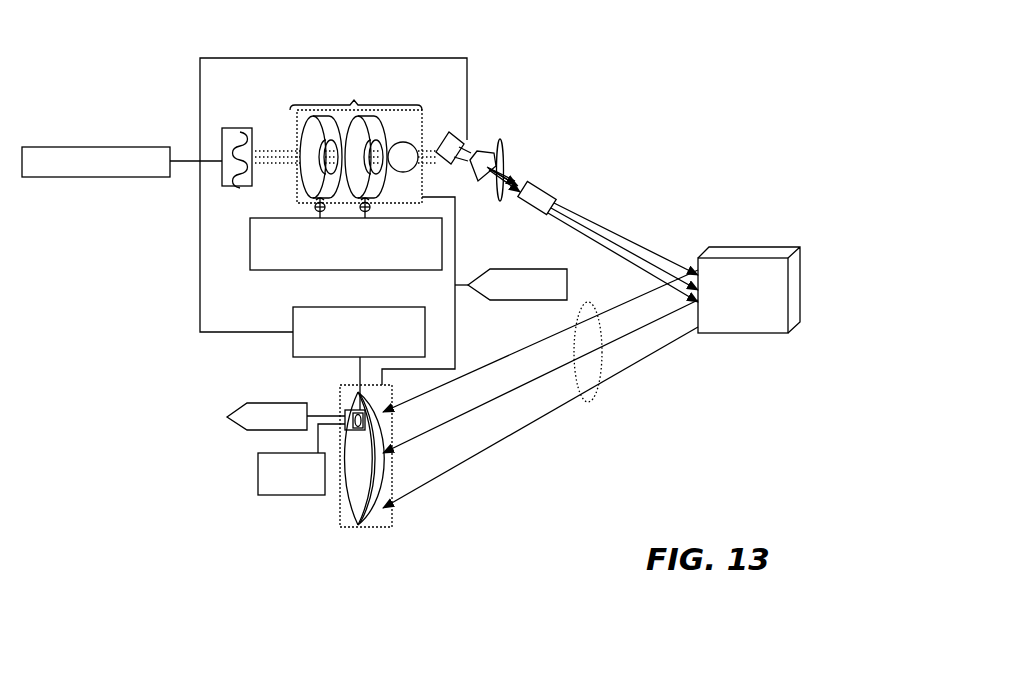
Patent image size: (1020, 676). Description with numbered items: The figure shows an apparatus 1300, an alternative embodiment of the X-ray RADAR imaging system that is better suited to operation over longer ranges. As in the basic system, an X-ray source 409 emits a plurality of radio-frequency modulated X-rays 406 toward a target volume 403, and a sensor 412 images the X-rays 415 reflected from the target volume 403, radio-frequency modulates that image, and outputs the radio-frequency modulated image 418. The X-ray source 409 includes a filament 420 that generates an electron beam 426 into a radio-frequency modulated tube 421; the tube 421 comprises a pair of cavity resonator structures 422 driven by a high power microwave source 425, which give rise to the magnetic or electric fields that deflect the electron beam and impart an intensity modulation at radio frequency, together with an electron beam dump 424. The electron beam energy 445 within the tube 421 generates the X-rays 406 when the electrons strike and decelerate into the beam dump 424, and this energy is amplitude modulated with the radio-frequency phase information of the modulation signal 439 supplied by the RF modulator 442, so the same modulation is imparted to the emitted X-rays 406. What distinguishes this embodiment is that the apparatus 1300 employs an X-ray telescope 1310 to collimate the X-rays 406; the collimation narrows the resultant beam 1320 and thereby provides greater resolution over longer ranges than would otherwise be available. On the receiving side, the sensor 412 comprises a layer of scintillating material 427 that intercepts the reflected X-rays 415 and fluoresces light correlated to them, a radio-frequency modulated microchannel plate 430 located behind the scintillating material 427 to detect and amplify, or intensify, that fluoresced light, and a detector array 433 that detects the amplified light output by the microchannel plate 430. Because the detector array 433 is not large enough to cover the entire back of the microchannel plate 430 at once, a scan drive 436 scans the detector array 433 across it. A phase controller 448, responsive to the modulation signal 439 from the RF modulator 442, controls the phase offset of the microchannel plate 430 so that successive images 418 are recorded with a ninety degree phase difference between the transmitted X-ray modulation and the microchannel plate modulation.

The apparatus 1300 is at (96, 27).
The target volume 403 is at (747, 250).
The X-rays 406 is at (500, 151).
The X-ray source 409 is at (419, 112).
The sensor 412 is at (340, 526).
The reflected X-rays 415 is at (590, 403).
The radio-frequency modulated image 418 is at (238, 423).
The filament 420 is at (238, 128).
The radio-frequency modulated tube 421 is at (356, 139).
The cavity resonator structures 422 is at (386, 176).
The electron beam dump 424 is at (417, 147).
The high power microwave source 425 is at (383, 148).
The electron beam 426 is at (276, 148).
The scintillating material 427 is at (375, 523).
The radio-frequency modulated microchannel plate 430 is at (358, 394).
The detector array 433 is at (345, 411).
The scan drive 436 is at (259, 496).
The modulation signal 439 is at (200, 74).
The RF modulator 442 is at (100, 146).
The electron beam energy 445 is at (500, 300).
The phase controller 448 is at (295, 351).
The X-ray telescope 1310 is at (553, 197).
The resultant beam 1320 is at (627, 238).